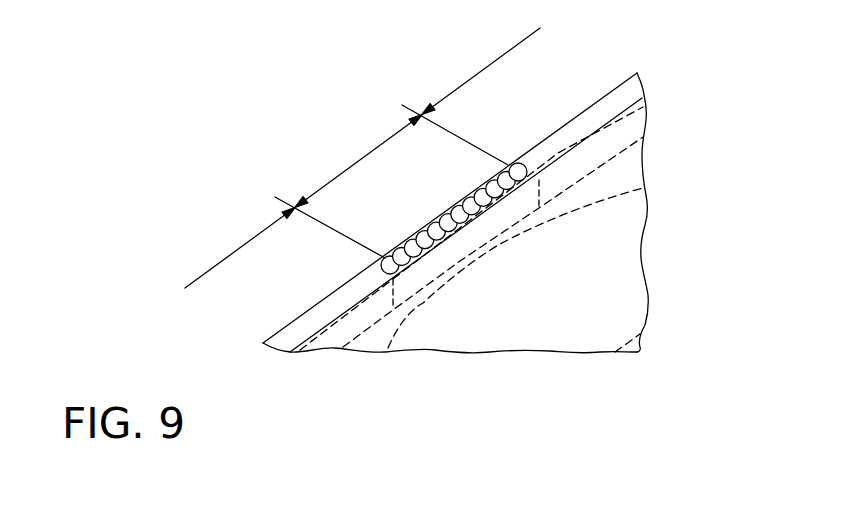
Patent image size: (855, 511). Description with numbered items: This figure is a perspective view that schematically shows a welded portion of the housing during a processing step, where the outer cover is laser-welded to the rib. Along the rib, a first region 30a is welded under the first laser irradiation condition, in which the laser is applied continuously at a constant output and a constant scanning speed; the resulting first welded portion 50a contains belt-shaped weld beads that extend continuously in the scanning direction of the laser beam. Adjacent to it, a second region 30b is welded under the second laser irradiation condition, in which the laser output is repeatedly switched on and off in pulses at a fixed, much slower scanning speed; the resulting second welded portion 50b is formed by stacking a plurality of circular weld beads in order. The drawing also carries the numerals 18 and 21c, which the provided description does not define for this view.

The panel 18 is at (633, 252).
The flange 21c is at (633, 122).
The first region 30a is at (362, 158).
The second region 30b is at (391, 181).
The first welded portion 50a is at (578, 113).
The second welded portion 50b is at (438, 220).